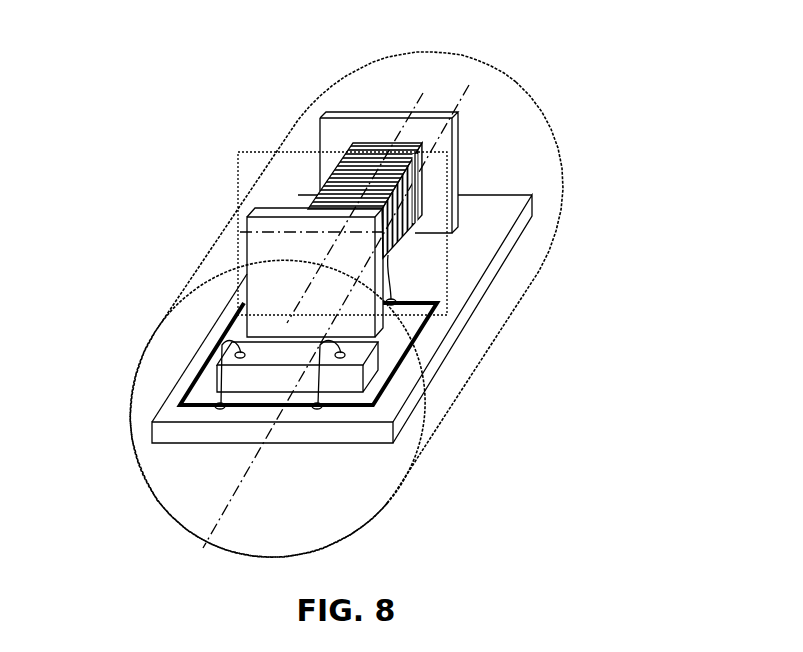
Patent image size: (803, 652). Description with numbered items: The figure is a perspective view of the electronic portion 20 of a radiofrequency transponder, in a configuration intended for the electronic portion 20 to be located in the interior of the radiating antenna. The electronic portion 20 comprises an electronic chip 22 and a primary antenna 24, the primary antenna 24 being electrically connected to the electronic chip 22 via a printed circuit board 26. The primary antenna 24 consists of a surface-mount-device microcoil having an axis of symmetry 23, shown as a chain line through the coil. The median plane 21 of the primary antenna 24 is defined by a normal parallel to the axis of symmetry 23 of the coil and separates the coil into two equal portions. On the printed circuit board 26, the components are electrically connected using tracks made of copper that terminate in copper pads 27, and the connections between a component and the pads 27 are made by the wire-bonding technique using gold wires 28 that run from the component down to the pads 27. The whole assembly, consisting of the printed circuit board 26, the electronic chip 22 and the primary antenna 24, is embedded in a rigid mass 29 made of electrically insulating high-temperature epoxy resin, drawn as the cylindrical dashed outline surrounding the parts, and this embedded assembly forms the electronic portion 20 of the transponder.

The electronic portion 20 is at (199, 197).
The median plane 21 is at (449, 268).
The electronic chip 22 is at (265, 345).
The axis of symmetry 23 is at (399, 134).
The primary antenna 24 is at (402, 180).
The printed circuit board 26 is at (172, 407).
The copper pads 27 is at (230, 410).
The gold wires 28 is at (229, 383).
The rigid mass 29 is at (546, 186).